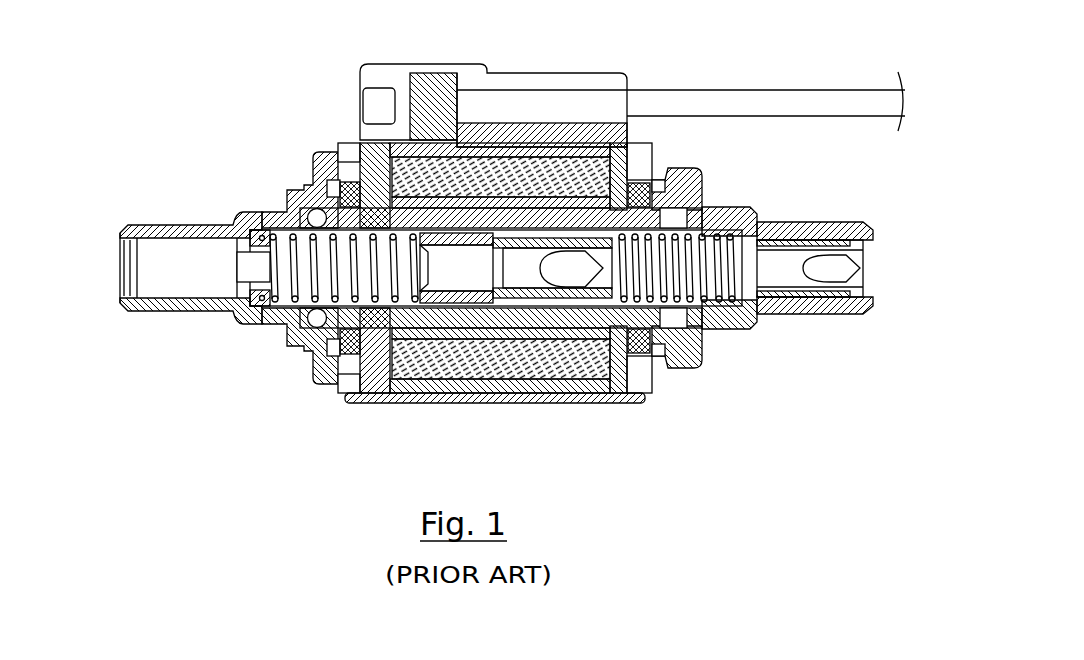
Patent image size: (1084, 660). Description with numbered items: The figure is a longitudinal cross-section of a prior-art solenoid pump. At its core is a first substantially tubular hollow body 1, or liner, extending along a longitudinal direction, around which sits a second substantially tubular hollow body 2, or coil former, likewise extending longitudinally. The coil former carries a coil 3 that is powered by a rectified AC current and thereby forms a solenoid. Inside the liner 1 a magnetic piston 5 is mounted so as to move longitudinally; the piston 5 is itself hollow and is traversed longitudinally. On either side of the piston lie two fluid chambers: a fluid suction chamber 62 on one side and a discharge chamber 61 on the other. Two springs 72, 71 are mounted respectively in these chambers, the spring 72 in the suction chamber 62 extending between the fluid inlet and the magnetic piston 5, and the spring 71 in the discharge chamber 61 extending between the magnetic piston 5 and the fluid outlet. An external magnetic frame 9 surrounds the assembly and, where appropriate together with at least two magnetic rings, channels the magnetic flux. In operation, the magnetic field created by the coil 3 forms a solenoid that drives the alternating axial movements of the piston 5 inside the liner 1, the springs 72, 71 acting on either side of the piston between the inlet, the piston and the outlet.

The first substantially tubular hollow body 1 is at (836, 225).
The second substantially tubular hollow body 2 is at (628, 165).
The coil 3 is at (493, 168).
The magnetic piston 5 is at (458, 268).
The discharge chamber 61 is at (705, 262).
The fluid suction chamber 62 is at (305, 273).
The spring 71 is at (682, 290).
The spring 72 is at (355, 273).
The external magnetic frame 9 is at (575, 395).